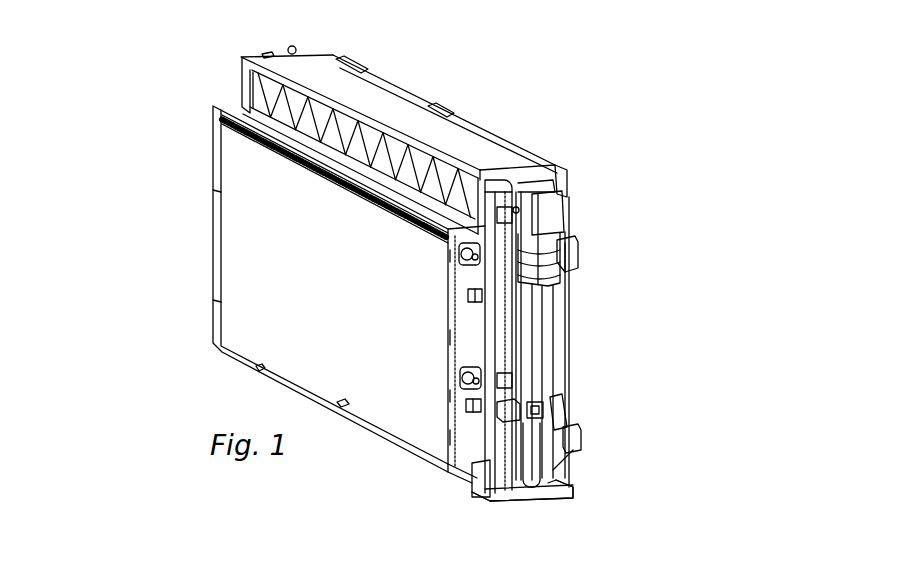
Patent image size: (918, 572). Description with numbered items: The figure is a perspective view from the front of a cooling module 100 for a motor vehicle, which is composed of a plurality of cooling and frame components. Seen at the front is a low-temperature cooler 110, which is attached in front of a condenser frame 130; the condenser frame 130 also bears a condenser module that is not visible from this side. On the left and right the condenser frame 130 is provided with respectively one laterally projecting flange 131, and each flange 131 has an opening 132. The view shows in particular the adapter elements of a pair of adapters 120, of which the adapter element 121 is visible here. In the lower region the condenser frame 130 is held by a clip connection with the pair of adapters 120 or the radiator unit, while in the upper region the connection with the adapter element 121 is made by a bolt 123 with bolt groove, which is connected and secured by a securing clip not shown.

The cooling module 100 is at (575, 90).
The low-temperature cooler 110 is at (247, 317).
The pair of adapters 120 is at (656, 339).
The adapter element 121 is at (535, 335).
The bolt 123 is at (644, 228).
The condenser frame 130 is at (470, 482).
The laterally projecting flange 131 is at (560, 165).
The opening 132 is at (560, 203).